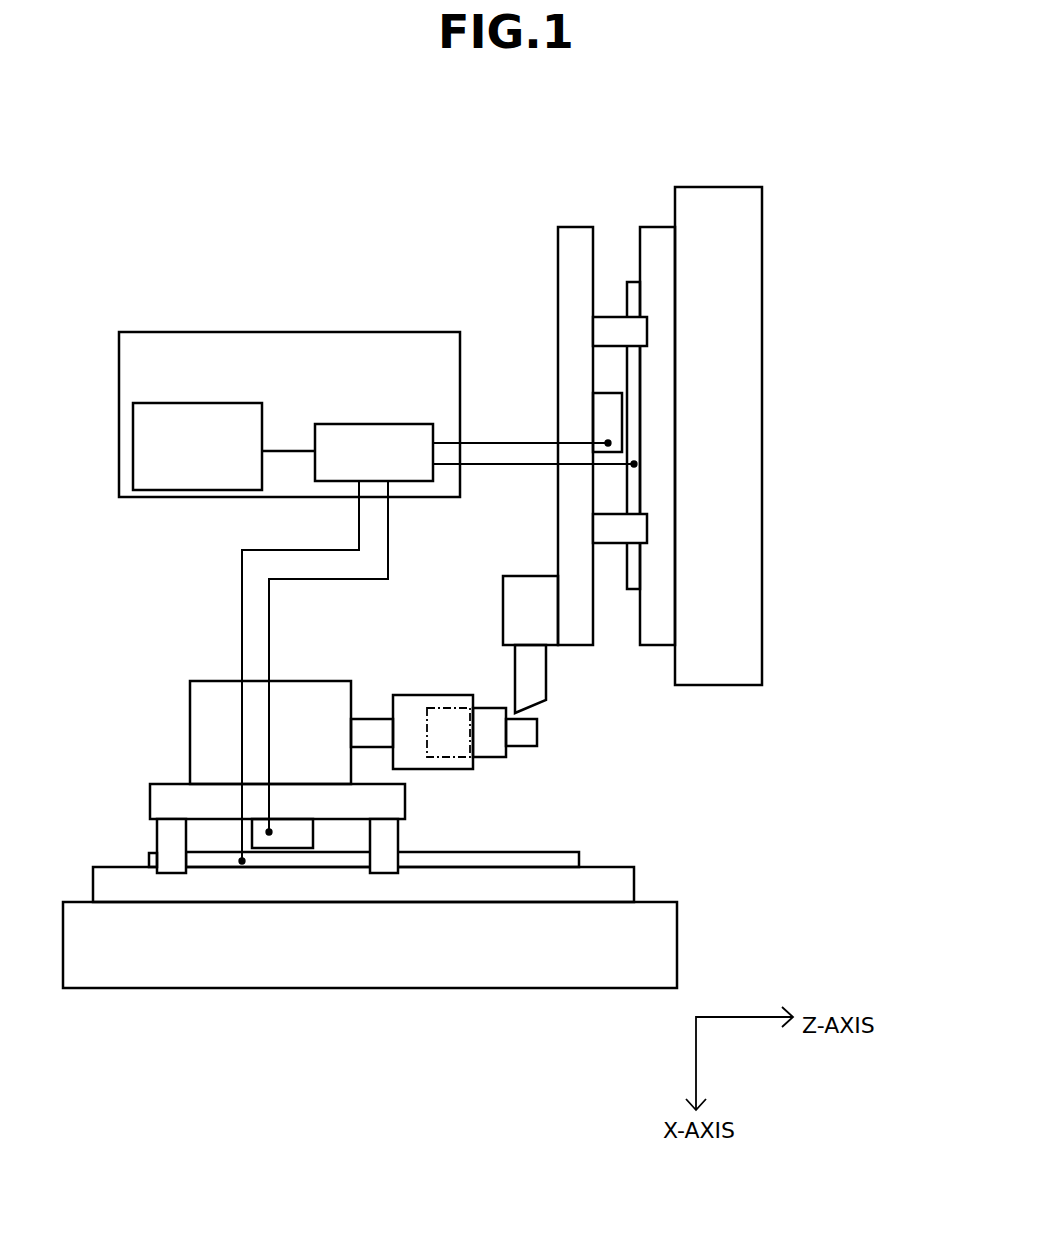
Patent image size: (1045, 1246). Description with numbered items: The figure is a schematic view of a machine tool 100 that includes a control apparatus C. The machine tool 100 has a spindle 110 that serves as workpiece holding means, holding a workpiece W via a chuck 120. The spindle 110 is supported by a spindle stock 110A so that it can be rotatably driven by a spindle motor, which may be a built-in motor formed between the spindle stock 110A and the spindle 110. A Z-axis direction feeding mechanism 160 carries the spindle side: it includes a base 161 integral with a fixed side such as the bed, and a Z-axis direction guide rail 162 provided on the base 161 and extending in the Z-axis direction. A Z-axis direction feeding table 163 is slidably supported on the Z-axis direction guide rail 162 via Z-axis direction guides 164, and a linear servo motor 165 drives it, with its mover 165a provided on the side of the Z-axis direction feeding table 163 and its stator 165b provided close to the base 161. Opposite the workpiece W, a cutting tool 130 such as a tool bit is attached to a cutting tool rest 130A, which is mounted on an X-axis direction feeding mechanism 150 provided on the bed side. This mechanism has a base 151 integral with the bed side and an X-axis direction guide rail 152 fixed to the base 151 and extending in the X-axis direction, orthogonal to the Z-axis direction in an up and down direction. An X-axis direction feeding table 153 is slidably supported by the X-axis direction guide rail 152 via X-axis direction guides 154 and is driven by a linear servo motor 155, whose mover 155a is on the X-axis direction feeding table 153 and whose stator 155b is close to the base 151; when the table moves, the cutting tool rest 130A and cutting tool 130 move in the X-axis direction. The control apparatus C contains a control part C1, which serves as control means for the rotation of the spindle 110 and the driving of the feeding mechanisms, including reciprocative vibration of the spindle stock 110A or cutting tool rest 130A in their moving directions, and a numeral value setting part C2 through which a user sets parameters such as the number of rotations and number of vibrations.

The machine tool 100 is at (220, 238).
The control apparatus C is at (292, 331).
The control part C1 is at (372, 424).
The numeral value setting part C2 is at (204, 403).
The X-axis direction feeding mechanism 150 is at (750, 108).
The base 151 is at (738, 200).
The X-axis direction guide rail 152 is at (655, 245).
The X-axis direction feeding table 153 is at (570, 307).
The X-axis direction guides 154 is at (610, 327).
The linear servo motor 155 is at (754, 415).
The mover 155a is at (610, 400).
The stator 155b is at (637, 428).
The cutting tool rest 130A is at (530, 595).
The cutting tool 130 is at (528, 672).
The spindle stock 110A is at (212, 712).
The spindle 110 is at (373, 730).
The chuck 120 is at (433, 705).
The workpiece W is at (525, 728).
The Z-axis direction feeding mechanism 160 is at (137, 1045).
The base 161 is at (518, 962).
The Z-axis direction guide rail 162 is at (626, 885).
The Z-axis direction feeding table 163 is at (178, 793).
The Z-axis direction guides 164 is at (173, 843).
The linear servo motor 165 is at (382, 955).
The mover 165a is at (295, 833).
The stator 165b is at (345, 859).